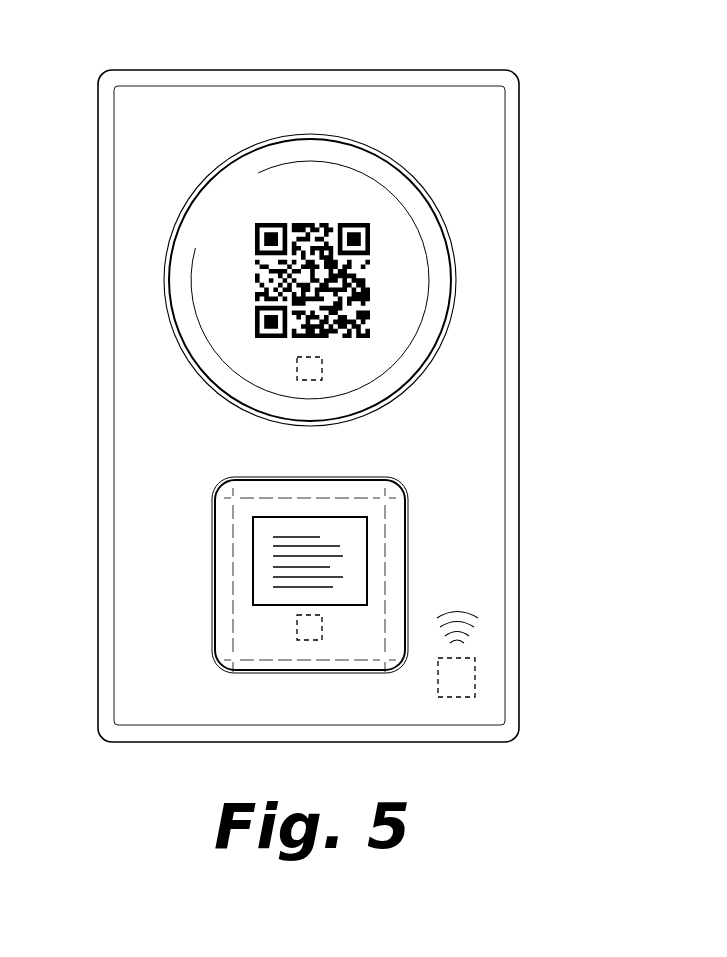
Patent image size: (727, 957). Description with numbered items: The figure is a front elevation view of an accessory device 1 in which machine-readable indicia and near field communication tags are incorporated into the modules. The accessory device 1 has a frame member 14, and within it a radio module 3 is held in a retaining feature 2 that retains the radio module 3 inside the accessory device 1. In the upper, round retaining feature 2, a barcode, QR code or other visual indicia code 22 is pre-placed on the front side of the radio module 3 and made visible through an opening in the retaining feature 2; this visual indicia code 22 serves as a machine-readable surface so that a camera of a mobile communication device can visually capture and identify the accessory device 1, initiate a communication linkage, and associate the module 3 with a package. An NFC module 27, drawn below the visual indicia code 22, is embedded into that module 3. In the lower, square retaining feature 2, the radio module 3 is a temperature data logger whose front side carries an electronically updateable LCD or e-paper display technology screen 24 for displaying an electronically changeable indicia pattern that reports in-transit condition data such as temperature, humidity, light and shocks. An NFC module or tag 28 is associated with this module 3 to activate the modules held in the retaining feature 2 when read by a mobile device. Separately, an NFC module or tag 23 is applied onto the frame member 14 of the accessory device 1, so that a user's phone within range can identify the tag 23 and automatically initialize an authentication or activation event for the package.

The accessory device 1 is at (462, 135).
The frame member 14 is at (482, 180).
The retaining feature 2 is at (190, 207).
The radio module 3 is at (392, 320).
The visual indicia code 22 is at (368, 275).
The NFC module 27 is at (322, 368).
The display technology screen 24 is at (262, 577).
The NFC module or tag 28 is at (308, 640).
The NFC module or tag 23 is at (475, 672).